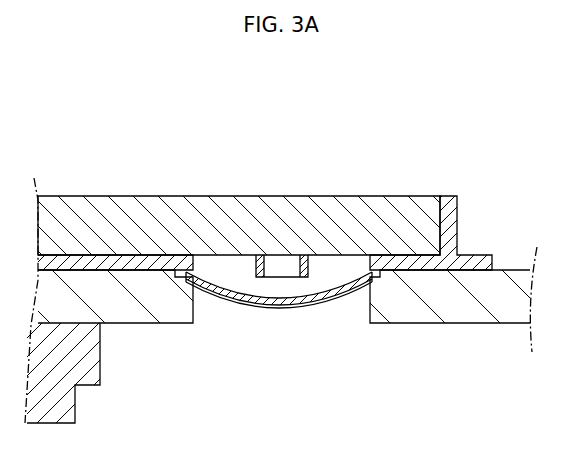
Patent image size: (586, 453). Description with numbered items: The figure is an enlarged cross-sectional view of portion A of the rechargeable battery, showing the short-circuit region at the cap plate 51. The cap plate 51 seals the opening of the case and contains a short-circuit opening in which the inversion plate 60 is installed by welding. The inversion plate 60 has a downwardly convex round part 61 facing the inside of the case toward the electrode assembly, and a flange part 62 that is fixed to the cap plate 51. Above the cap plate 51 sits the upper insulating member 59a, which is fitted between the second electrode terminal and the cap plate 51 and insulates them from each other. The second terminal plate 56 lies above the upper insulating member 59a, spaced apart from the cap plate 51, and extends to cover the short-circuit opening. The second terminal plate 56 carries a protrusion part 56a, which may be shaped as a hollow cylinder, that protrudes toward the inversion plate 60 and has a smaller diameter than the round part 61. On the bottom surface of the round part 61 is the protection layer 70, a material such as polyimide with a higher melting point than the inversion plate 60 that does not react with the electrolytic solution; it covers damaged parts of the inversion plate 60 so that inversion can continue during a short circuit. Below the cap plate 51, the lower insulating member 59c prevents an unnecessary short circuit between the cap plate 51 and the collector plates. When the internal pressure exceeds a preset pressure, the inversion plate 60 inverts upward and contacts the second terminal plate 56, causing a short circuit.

The second terminal plate 56 is at (220, 202).
The protrusion part 56a is at (281, 266).
The upper insulating member 59a is at (450, 196).
The lower insulating member 59c is at (92, 363).
The cap plate 51 is at (463, 316).
The inversion plate 60 is at (281, 337).
The round part 61 is at (285, 302).
The flange part 62 is at (368, 284).
The protection layer 70 is at (228, 300).
The portion 'A' A is at (407, 152).